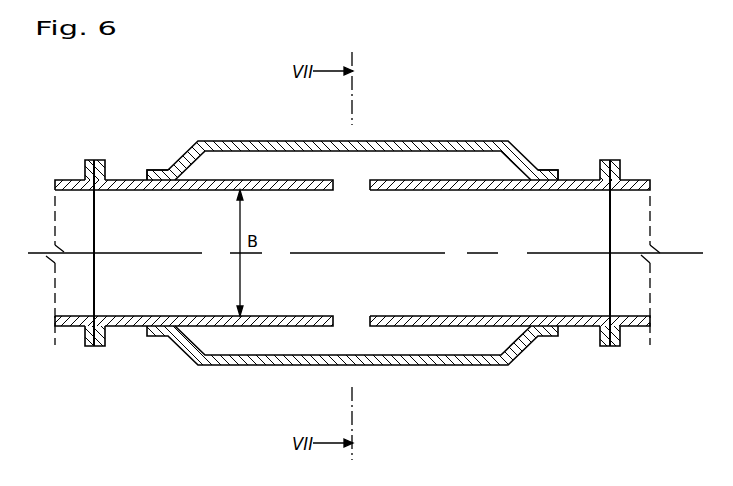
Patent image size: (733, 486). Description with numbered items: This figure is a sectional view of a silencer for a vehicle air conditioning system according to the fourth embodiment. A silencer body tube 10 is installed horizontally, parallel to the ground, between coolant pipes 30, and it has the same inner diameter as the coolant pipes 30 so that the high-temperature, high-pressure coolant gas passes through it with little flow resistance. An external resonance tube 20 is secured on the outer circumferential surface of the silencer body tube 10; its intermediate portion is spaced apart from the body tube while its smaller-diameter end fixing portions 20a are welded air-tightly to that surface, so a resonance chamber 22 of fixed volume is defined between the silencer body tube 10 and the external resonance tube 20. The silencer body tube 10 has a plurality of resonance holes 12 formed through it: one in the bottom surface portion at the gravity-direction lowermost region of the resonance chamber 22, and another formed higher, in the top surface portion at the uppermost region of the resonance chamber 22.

The silencer body tube 10 is at (237, 322).
The resonance holes 12 is at (353, 187).
The external resonance tube 20 is at (493, 366).
The end fixing portions 20a is at (158, 171).
The resonance chamber 22 is at (260, 166).
The coolant pipes 30 is at (70, 328).